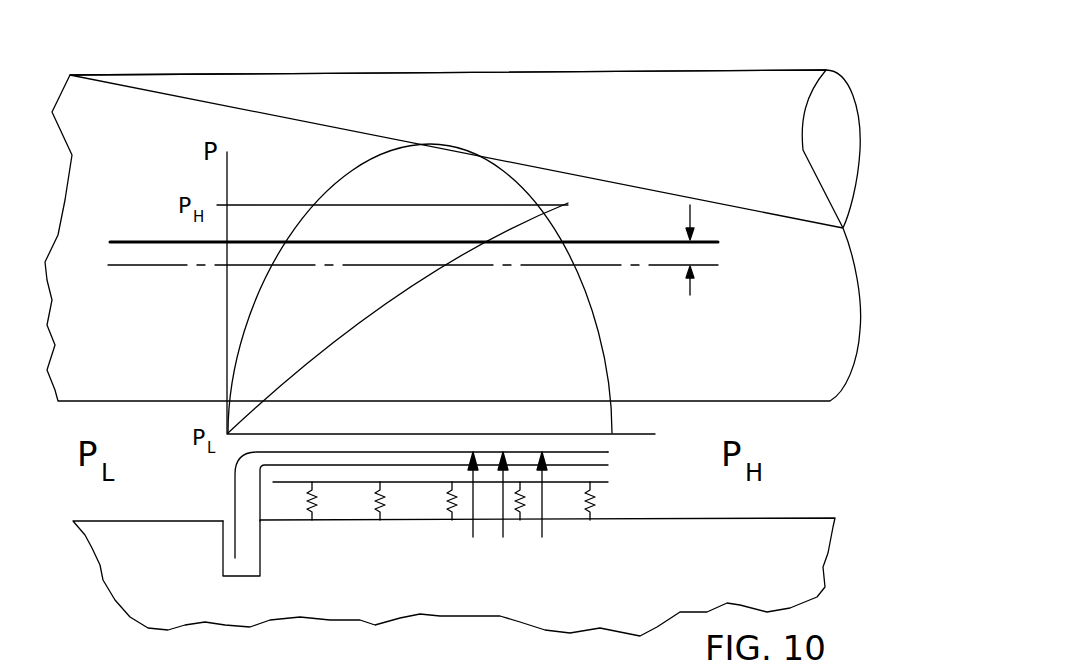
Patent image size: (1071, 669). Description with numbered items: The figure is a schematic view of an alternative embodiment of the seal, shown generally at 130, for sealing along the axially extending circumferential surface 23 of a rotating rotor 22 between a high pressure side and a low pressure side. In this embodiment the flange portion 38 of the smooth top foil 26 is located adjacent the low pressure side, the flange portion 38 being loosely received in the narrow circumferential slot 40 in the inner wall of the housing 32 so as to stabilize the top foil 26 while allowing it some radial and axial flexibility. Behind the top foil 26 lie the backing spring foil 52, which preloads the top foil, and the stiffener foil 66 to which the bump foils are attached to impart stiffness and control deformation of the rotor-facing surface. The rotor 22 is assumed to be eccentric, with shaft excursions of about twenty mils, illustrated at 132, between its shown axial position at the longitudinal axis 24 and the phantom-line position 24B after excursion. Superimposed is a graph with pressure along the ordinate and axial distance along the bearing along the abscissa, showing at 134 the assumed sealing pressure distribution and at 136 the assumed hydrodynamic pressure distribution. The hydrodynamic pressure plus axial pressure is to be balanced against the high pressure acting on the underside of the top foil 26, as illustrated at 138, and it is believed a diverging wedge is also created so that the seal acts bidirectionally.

The alternative embodiment of the seal 130 is at (453, 200).
The rotor 22 is at (756, 127).
The axially extending circumferential surface 23 is at (305, 72).
The longitudinal axis 24 is at (143, 241).
The axial position after excursion 24B is at (148, 268).
The shaft excursion 132 is at (690, 205).
The hydrodynamic pressure distribution plot 136 is at (497, 165).
The sealing pressure distribution plot 134 is at (380, 307).
The smooth top foil 26 is at (608, 452).
The backing spring foil 52 is at (608, 467).
The stiffener foil 66 is at (608, 483).
The high pressure acting on underside of top foil 138 is at (542, 532).
The flange portion 38 is at (235, 494).
The circumferential slot 40 is at (253, 556).
The housing 32 is at (420, 602).